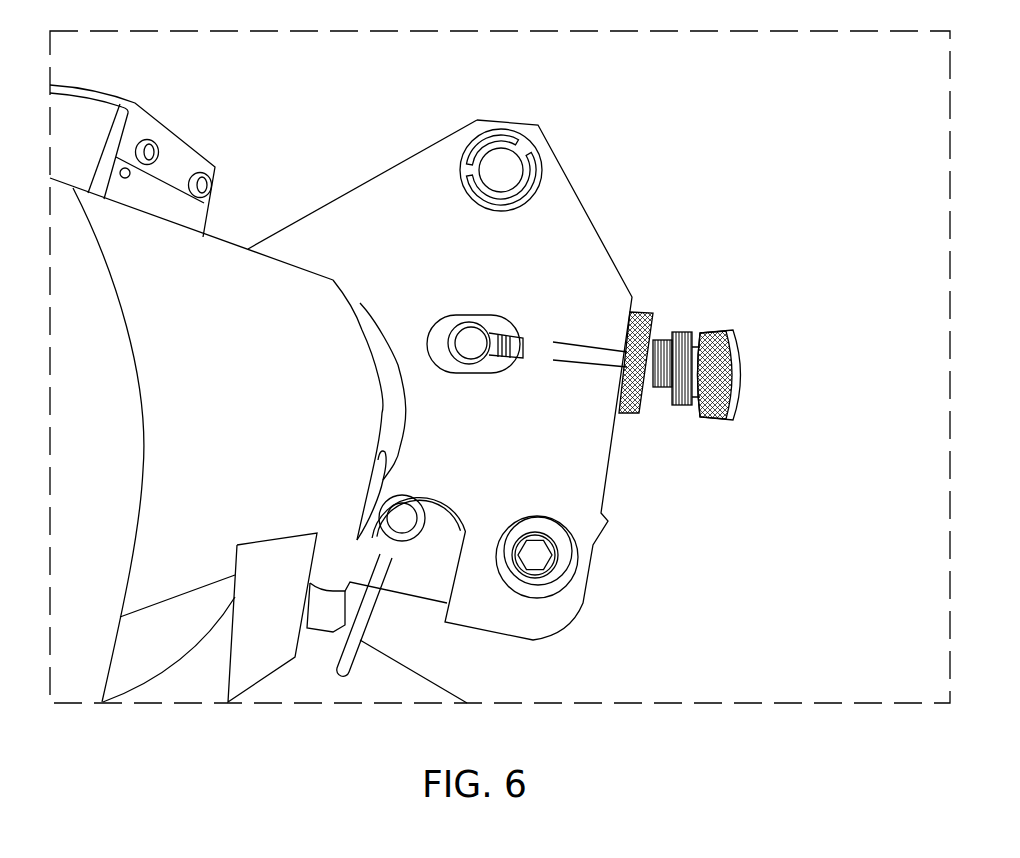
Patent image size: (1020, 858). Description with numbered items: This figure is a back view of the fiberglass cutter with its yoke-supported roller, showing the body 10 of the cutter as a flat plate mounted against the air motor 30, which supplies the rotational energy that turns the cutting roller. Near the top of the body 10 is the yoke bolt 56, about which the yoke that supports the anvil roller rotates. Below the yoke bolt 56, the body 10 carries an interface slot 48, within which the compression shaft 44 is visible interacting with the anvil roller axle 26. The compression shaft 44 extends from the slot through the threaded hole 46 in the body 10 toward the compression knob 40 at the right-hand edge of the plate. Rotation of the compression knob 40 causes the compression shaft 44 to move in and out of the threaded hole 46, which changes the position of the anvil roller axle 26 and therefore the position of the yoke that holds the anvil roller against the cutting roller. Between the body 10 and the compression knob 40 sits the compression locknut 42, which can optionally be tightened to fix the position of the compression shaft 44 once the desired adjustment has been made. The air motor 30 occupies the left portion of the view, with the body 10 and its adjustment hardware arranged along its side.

The body 10 is at (532, 270).
The anvil roller axle 26 is at (472, 357).
The air motor 30 is at (263, 413).
The compression knob 40 is at (716, 327).
The compression locknut 42 is at (641, 305).
The compression shaft 44 is at (659, 387).
The threaded hole 46 is at (580, 322).
The interface slot 48 is at (468, 317).
The yoke bolt 56 is at (500, 172).